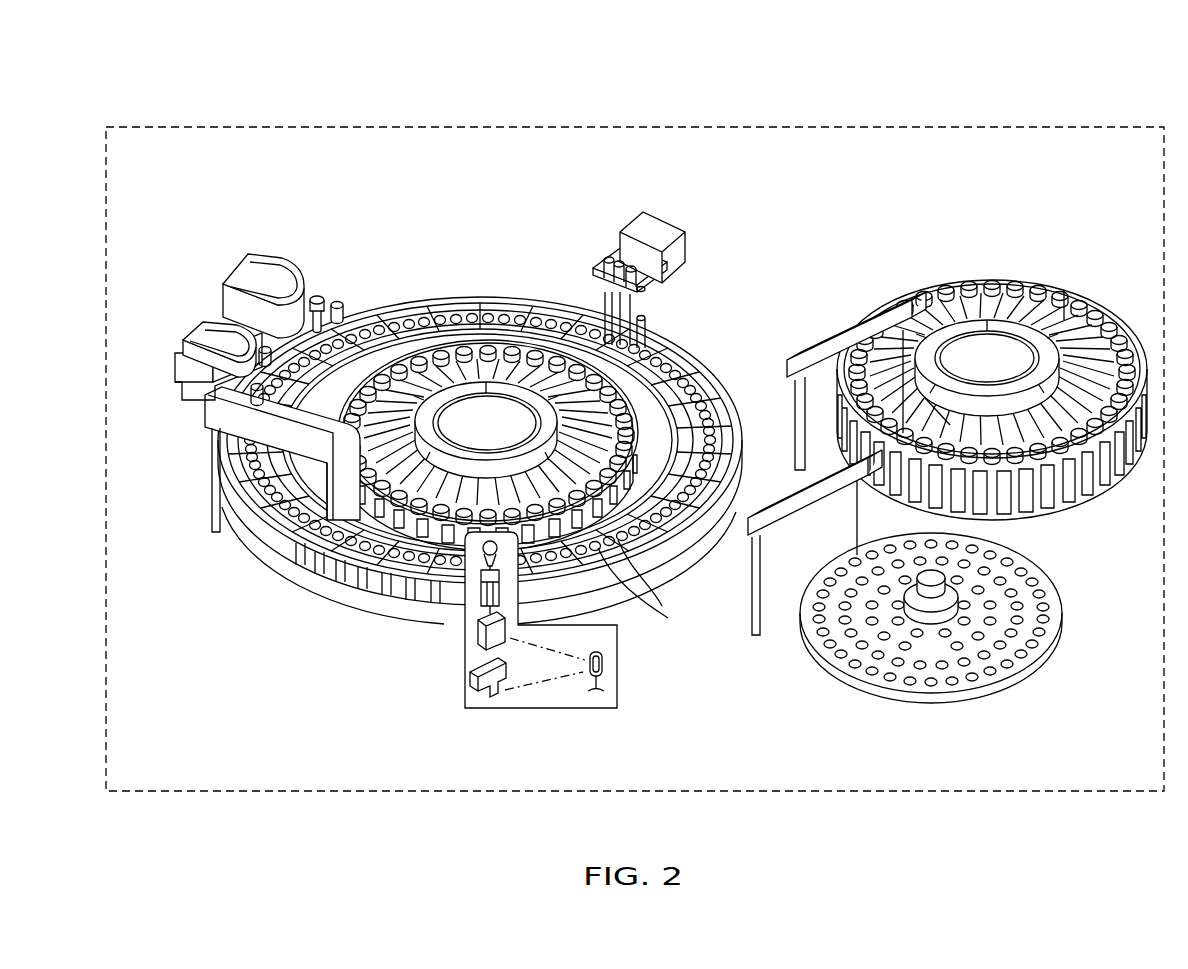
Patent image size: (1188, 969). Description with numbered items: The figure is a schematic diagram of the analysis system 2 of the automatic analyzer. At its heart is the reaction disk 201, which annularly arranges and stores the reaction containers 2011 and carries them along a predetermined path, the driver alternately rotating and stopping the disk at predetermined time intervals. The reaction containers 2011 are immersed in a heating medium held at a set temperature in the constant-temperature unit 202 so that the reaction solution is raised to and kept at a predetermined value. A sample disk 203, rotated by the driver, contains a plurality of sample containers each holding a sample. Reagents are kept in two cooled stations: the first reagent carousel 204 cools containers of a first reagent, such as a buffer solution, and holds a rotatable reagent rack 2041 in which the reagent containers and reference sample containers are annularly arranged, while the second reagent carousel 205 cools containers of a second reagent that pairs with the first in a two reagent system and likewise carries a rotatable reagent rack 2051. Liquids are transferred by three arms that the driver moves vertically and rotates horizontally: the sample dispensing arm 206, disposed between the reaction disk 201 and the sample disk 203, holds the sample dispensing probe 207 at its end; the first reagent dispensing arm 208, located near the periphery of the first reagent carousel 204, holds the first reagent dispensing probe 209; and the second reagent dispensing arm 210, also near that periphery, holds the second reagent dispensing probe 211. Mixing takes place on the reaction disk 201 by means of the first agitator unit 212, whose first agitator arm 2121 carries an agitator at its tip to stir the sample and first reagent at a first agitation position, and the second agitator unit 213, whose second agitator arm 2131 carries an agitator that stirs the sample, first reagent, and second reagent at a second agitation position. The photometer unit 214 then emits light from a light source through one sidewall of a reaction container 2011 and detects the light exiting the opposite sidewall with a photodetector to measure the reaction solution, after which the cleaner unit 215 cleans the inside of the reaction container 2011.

The analysis system 2 is at (645, 104).
The reaction disk 201 is at (485, 292).
The reaction container 2011 is at (666, 588).
The constant-temperature unit 202 is at (358, 583).
The sample disk 203 is at (1062, 605).
The first reagent carousel 204 is at (560, 343).
The reagent rack 2041 is at (440, 422).
The second reagent carousel 205 is at (1002, 282).
The reagent rack 2051 is at (1018, 342).
The sample dispensing arm 206 is at (840, 520).
The sample dispensing probe 207 is at (1065, 290).
The first reagent dispensing arm 208 is at (205, 406).
The first reagent dispensing probe 209 is at (328, 497).
The second reagent dispensing arm 210 is at (812, 355).
The second reagent dispensing probe 211 is at (925, 398).
The first agitator unit 212 is at (217, 330).
The first agitator arm 2121 is at (185, 355).
The second agitator unit 213 is at (273, 263).
The second agitator arm 2131 is at (317, 293).
The photometer unit 214 is at (465, 662).
The cleaner unit 215 is at (660, 227).